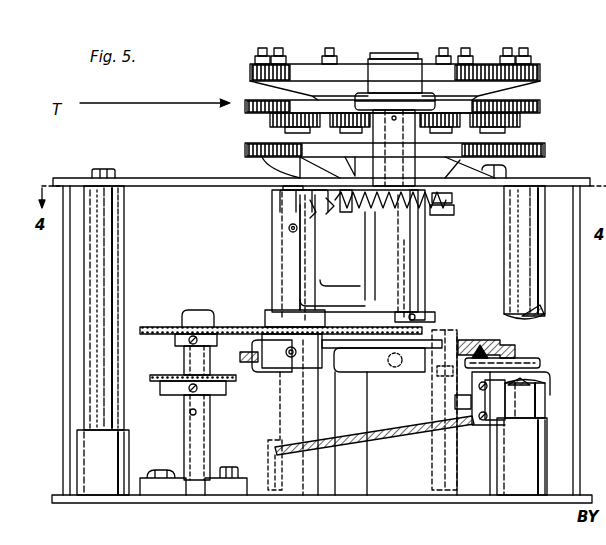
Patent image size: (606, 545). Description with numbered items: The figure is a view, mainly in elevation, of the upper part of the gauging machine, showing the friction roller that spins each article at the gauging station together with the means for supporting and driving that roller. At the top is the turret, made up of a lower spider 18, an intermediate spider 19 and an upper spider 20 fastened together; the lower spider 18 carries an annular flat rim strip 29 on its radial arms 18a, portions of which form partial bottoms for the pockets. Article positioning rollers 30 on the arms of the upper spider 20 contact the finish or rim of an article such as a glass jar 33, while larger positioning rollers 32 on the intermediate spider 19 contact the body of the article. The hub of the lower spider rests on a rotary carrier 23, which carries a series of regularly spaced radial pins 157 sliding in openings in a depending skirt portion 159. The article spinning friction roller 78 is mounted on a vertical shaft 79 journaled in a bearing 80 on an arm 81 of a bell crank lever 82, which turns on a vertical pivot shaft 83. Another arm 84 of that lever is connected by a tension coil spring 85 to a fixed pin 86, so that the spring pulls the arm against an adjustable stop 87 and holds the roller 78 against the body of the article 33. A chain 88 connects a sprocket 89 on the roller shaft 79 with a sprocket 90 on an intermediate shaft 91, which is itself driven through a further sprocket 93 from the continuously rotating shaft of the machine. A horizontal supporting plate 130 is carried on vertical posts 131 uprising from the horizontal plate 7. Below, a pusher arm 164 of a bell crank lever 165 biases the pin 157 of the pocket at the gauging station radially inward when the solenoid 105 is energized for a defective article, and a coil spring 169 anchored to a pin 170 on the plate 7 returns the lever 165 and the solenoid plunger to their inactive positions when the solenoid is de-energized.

The plate 7 is at (322, 503).
The lower spider 18 is at (436, 178).
The radial arms 18a is at (500, 179).
The intermediate spider 19 is at (540, 104).
The upper spider 20 is at (540, 68).
The rotary carrier 23 is at (484, 340).
The rim strip 29 is at (540, 148).
The article positioning rollers 30 is at (500, 52).
The positioning rollers 32 is at (520, 124).
The glass jar 33 is at (407, 52).
The article spinning friction roller 78 is at (418, 100).
The vertical shaft 79 is at (423, 288).
The bearing 80 is at (425, 258).
The arm 81 is at (355, 190).
The bell crank lever 82 is at (272, 250).
The vertical pivot shaft 83 is at (285, 276).
The arm 84 is at (272, 200).
The tension coil spring 85 is at (330, 206).
The pin 86 is at (455, 210).
The adjustable stop 87 is at (312, 210).
The chain 88 is at (244, 327).
The sprocket 89 is at (425, 314).
The sprocket 90 is at (180, 325).
The intermediate shaft 91 is at (186, 356).
The sprocket 93 is at (162, 382).
The solenoid 105 is at (528, 382).
The horizontal supporting plate 130 is at (158, 178).
The vertical posts 131 is at (118, 240).
The radial pins 157 is at (250, 356).
The skirt portion 159 is at (260, 372).
The pusher arm 164 is at (348, 372).
The bell crank lever 165 is at (432, 384).
The coil spring 169 is at (348, 432).
The pin 170 is at (266, 464).